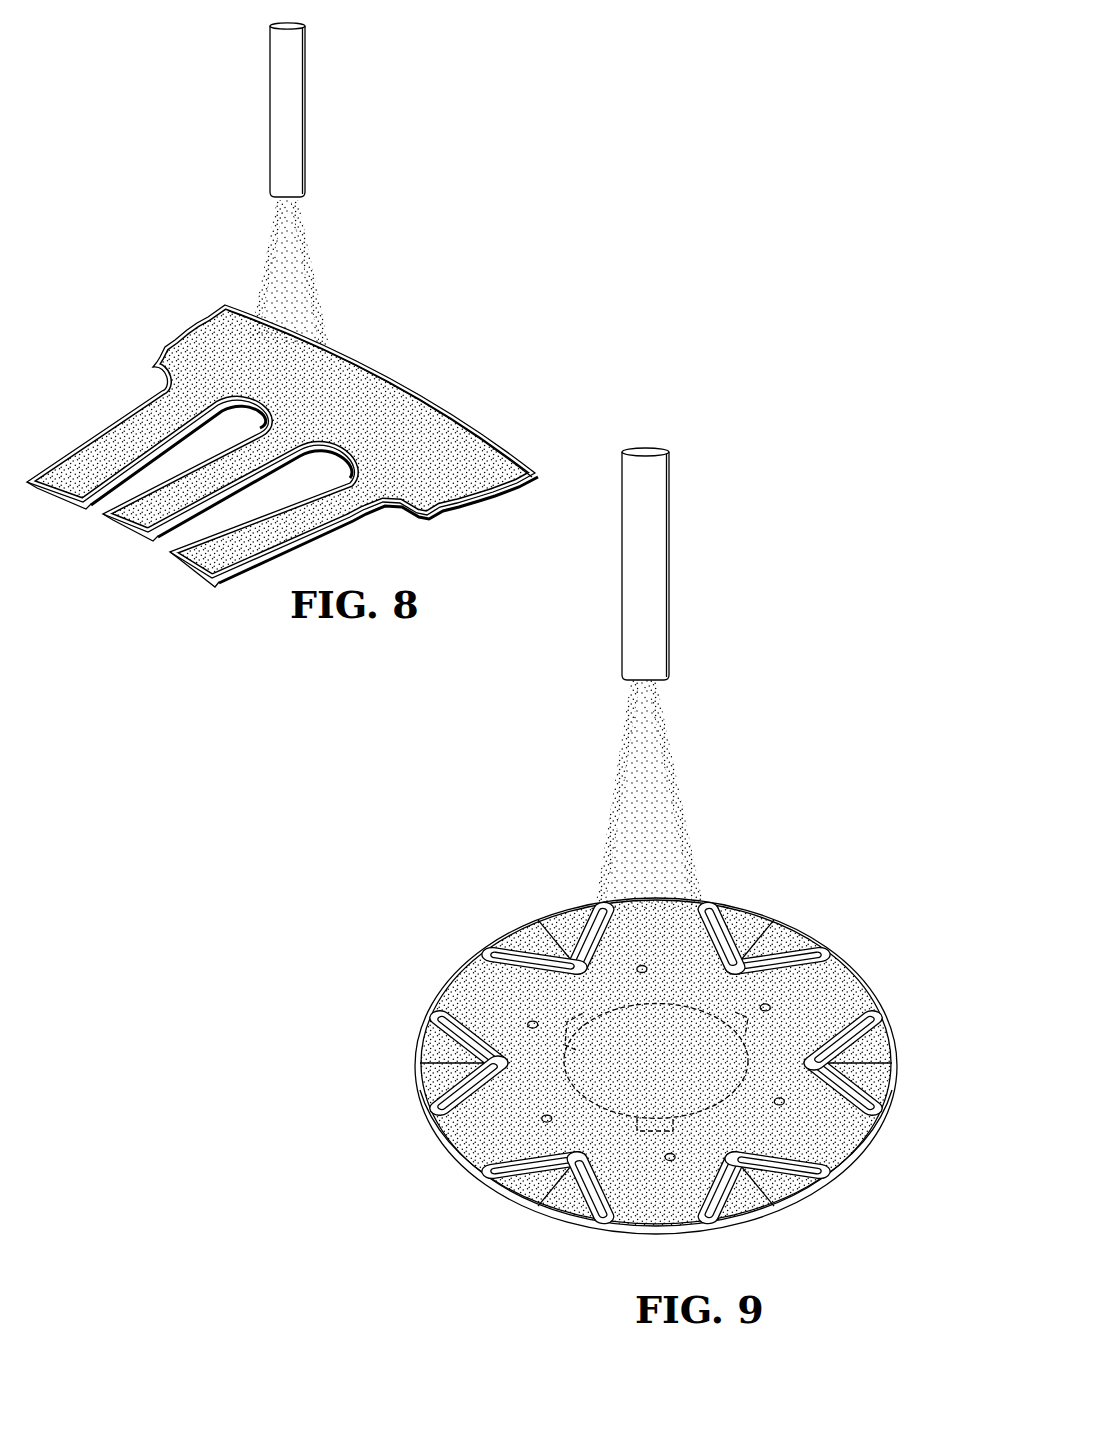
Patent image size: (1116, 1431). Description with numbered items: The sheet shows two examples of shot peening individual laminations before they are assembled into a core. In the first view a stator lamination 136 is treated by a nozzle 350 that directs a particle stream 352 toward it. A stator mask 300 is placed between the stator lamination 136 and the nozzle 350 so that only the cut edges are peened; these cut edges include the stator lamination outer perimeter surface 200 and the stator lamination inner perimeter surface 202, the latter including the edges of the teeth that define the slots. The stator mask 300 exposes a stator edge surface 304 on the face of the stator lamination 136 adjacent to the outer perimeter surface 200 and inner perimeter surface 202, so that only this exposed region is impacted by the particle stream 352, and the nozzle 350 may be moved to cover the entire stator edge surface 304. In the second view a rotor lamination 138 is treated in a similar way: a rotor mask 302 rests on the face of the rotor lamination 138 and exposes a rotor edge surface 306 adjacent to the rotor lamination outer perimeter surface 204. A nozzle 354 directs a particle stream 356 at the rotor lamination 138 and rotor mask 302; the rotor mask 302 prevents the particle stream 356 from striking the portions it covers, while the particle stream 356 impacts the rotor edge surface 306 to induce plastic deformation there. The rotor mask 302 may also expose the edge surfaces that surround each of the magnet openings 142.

In FIG. 8, the stator lamination 136 is at (476, 510).
In FIG. 8, the stator lamination outer perimeter surface 200 is at (432, 402).
In FIG. 8, the stator lamination inner perimeter surface 202 is at (187, 572).
In FIG. 8, the stator mask 300 is at (207, 342).
In FIG. 8, the stator edge surface 304 is at (82, 452).
In FIG. 8, the nozzle 350 is at (308, 105).
In FIG. 8, the particle stream 352 is at (292, 245).
In FIG. 9, the rotor lamination 138 is at (834, 1203).
In FIG. 9, the magnet openings 142 is at (520, 965).
In FIG. 9, the rotor lamination outer perimeter surface 204 is at (812, 942).
In FIG. 9, the rotor mask 302 is at (678, 1063).
In FIG. 9, the rotor edge surface 306 is at (637, 1237).
In FIG. 9, the nozzle 354 is at (669, 582).
In FIG. 9, the particle stream 356 is at (647, 733).